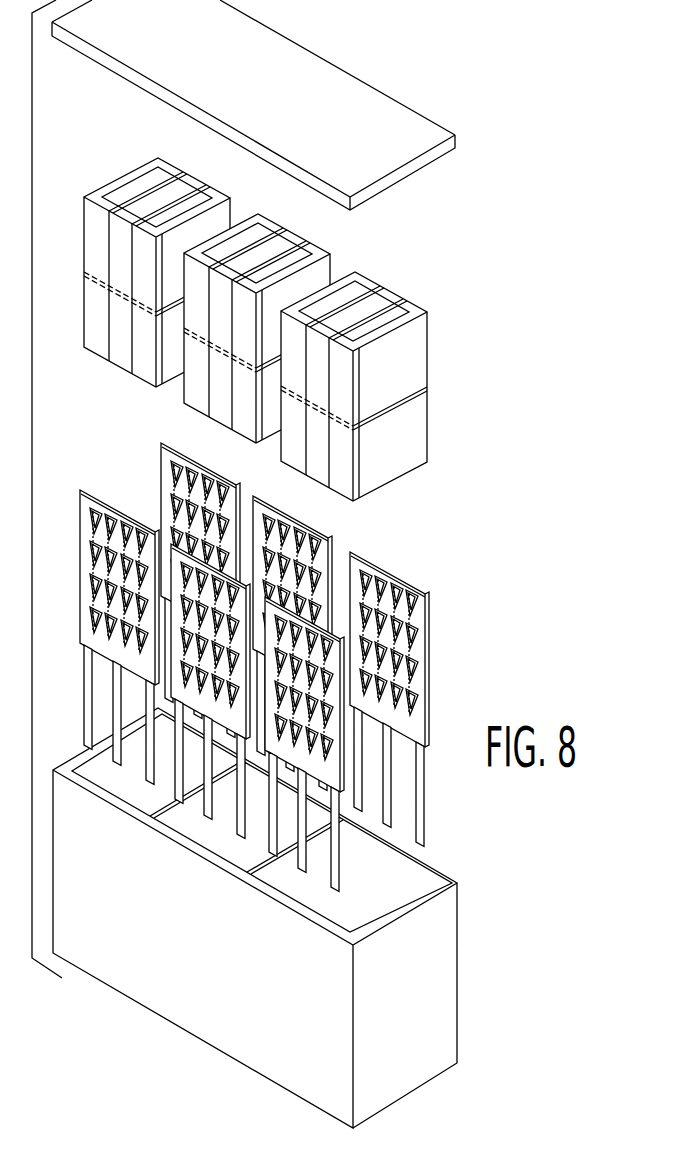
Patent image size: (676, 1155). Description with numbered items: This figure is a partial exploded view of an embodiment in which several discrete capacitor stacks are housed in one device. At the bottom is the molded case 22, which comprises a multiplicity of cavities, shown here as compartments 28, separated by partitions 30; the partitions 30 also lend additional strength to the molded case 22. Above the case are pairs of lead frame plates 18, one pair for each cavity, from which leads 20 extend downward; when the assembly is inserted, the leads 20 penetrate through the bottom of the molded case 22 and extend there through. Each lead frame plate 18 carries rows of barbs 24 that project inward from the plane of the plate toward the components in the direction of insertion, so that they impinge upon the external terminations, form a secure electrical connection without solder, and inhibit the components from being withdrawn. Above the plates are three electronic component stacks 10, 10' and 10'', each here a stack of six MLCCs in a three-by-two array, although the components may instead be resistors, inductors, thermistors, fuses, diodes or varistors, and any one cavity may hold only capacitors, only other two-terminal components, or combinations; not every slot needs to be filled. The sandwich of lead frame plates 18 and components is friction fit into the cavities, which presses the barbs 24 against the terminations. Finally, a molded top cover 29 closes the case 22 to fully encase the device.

The electronic component 10 is at (359, 386).
The electronic component 10' is at (273, 328).
The electronic component 10'' is at (177, 272).
The lead frame plate 18 is at (277, 500).
The lead 20 is at (428, 840).
The molded case 22 is at (412, 991).
The barb 24 is at (172, 483).
The compartment 28 is at (108, 780).
The molded top cover 29 is at (357, 110).
The partition 30 is at (155, 822).